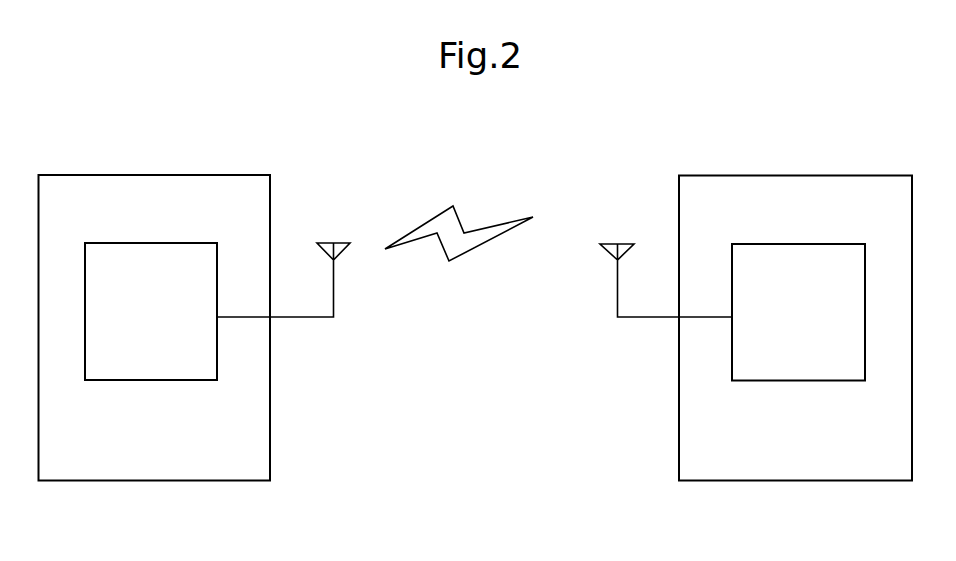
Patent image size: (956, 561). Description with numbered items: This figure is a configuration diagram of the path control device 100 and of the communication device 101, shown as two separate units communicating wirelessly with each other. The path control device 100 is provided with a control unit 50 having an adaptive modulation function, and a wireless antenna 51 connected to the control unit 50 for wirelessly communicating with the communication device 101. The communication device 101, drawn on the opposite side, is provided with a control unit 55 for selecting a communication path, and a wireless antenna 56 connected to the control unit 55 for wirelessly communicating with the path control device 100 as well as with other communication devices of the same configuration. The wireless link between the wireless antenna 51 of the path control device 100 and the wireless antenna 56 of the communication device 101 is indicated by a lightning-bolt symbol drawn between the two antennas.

The path control device 100 is at (185, 481).
The control unit 50 is at (163, 382).
The wireless antenna 51 is at (335, 307).
The wireless antenna 56 is at (616, 307).
The communication device 101 is at (763, 482).
The control unit 55 is at (787, 382).